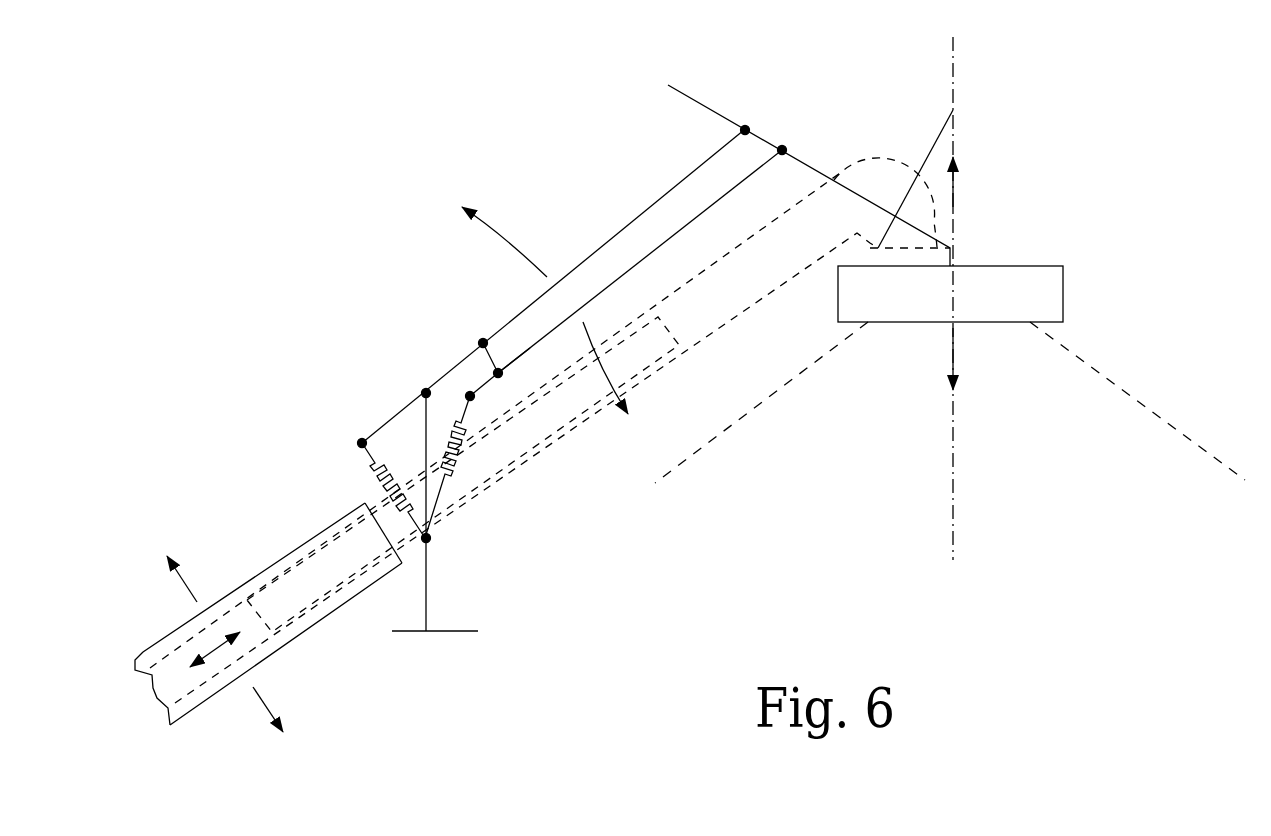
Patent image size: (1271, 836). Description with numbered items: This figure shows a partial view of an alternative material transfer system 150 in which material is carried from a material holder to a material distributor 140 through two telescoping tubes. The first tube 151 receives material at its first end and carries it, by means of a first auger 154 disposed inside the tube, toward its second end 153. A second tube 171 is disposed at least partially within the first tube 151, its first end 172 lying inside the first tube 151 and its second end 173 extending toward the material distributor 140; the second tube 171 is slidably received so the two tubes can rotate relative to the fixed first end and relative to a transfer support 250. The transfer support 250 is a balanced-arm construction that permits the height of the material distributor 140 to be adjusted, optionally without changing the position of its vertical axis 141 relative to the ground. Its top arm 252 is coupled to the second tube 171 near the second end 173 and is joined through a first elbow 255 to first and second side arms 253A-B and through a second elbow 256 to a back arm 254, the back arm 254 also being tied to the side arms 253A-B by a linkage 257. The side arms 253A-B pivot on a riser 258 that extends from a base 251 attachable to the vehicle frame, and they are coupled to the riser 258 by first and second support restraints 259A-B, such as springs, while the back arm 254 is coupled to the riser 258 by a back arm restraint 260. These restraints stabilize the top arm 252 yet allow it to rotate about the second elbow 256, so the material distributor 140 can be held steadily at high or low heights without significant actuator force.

The material transfer system 150 is at (312, 250).
The first tube 151 is at (233, 592).
The second end of the first tube 153 is at (362, 497).
The first auger 154 is at (192, 690).
The second tube 171 is at (557, 443).
The first end of the second tube 172 is at (287, 635).
The second end of the second tube 173 is at (952, 87).
The material distributor 140 is at (993, 323).
The vertical axis 141 is at (956, 470).
The transfer support 250 is at (718, 111).
The base 251 is at (457, 632).
The top arm 252 is at (818, 167).
The first and second side arms 253A-B is at (588, 262).
The back arm 254 is at (525, 352).
The first elbow 255 is at (747, 128).
The second elbow 256 is at (783, 148).
The linkage 257 is at (490, 360).
The riser 258 is at (427, 593).
The first and second support restraints 259A-B is at (387, 483).
The back arm restraint 260 is at (450, 465).